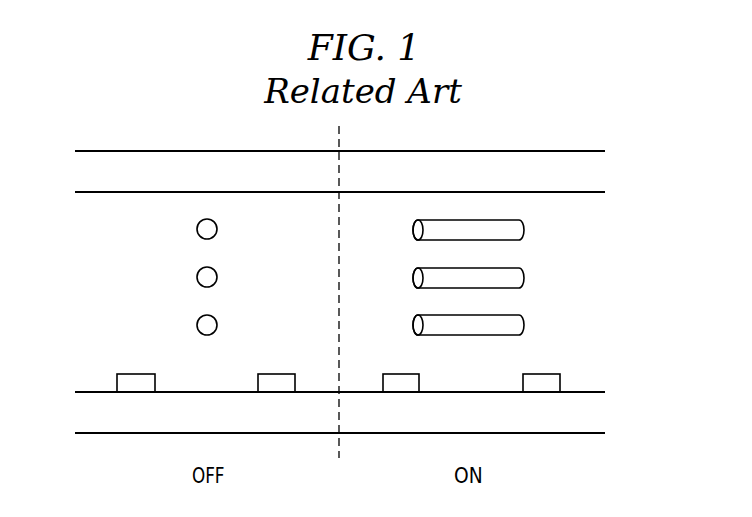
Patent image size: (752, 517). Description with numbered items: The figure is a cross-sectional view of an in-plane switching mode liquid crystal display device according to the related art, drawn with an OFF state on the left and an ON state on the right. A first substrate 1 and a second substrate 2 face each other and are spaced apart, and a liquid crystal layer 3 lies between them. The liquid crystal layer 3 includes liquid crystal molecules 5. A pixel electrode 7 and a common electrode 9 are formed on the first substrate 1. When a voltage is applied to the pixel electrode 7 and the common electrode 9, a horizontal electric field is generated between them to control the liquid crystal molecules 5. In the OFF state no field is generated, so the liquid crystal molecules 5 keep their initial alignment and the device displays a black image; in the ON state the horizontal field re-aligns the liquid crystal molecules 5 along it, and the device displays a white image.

The first substrate 1 is at (603, 428).
The second substrate 2 is at (604, 188).
The liquid crystal layer 3 is at (625, 200).
The liquid crystal molecules 5 is at (222, 229).
The pixel electrode 7 is at (136, 385).
The common electrode 9 is at (276, 385).